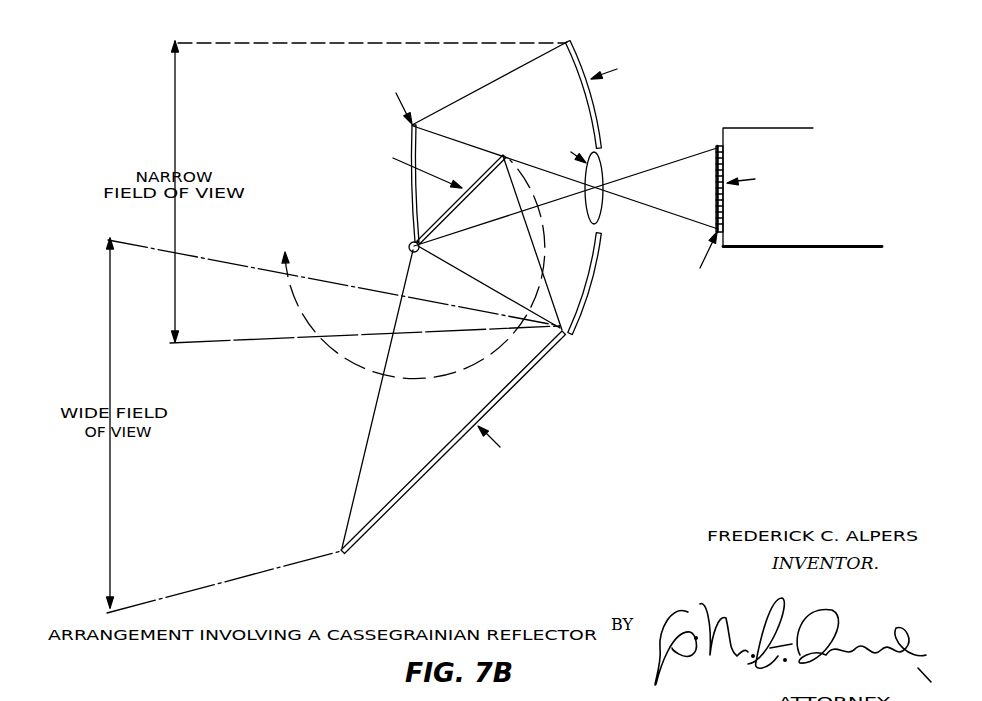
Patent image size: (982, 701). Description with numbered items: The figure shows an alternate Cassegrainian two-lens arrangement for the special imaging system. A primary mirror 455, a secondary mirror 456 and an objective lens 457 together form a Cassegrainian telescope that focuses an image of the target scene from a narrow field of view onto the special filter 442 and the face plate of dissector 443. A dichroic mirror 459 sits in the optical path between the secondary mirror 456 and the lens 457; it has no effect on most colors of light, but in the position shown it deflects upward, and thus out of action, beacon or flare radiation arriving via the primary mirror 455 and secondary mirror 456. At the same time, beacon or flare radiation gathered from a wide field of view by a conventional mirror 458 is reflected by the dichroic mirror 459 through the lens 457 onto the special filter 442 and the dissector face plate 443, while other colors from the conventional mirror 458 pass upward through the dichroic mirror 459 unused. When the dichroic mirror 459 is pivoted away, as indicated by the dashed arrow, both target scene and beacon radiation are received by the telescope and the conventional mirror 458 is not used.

The primary mirror 455 is at (583, 92).
The secondary mirror 456 is at (410, 216).
The objective lens 457 is at (603, 165).
The conventional mirror 458 is at (402, 496).
The dichroic mirror 459 is at (492, 165).
The special filter 442 is at (716, 159).
The face plate of dissector 443 is at (797, 245).